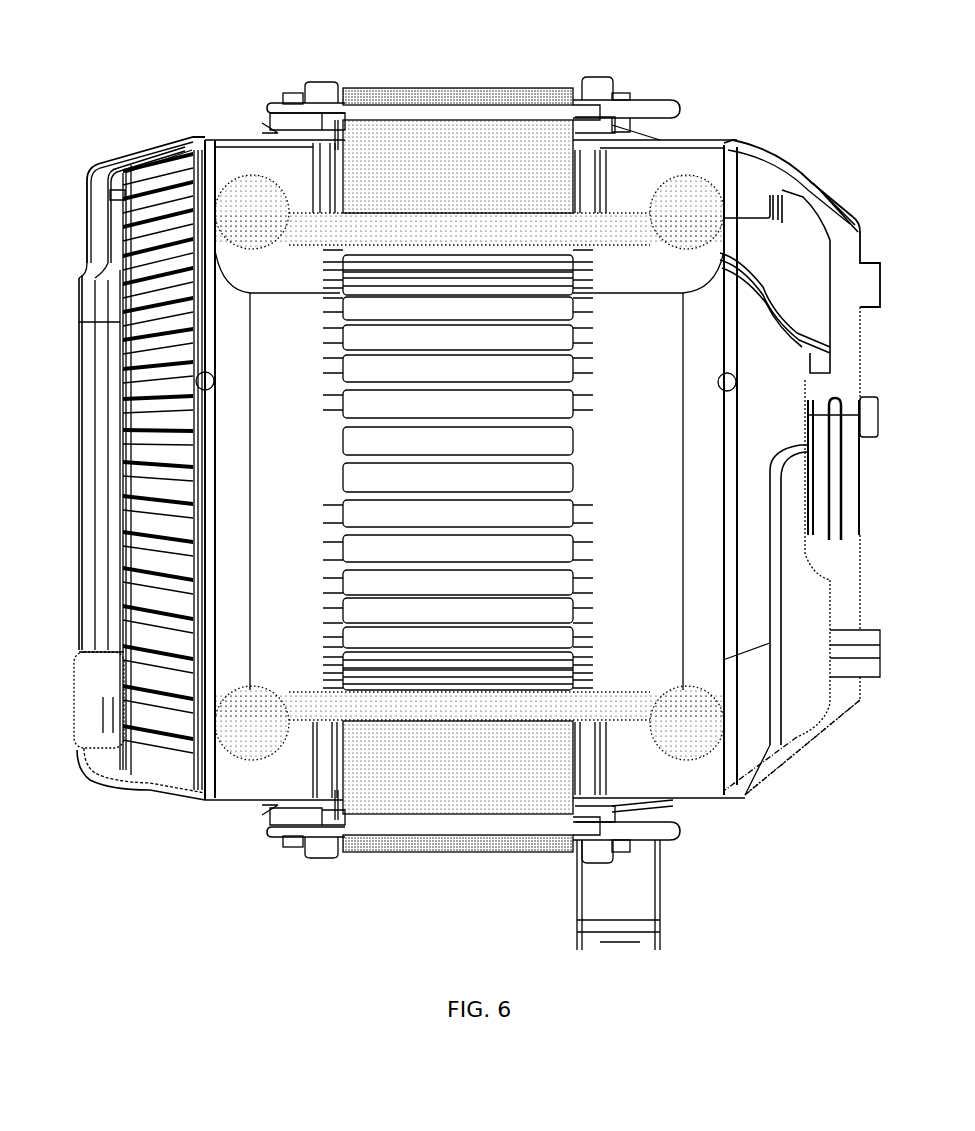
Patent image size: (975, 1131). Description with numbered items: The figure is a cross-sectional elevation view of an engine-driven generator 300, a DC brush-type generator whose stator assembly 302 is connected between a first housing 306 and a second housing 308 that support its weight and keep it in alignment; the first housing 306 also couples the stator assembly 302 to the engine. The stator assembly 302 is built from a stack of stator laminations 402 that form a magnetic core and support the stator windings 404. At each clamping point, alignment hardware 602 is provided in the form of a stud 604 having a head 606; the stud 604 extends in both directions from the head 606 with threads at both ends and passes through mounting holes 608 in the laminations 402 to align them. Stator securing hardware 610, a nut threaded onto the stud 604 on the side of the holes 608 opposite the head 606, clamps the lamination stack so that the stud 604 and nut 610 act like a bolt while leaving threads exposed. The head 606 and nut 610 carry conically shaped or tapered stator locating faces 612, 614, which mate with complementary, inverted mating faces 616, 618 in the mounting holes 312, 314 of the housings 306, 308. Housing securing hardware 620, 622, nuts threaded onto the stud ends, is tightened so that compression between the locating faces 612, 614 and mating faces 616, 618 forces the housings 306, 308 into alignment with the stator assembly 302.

The engine-driven generator 300 is at (150, 29).
The stator assembly 302 is at (350, 47).
The first housing 306 is at (123, 163).
The second housing 308 is at (763, 163).
The mounting hole 312 is at (310, 129).
The mounting hole 314 is at (604, 131).
The stator laminations 402 is at (453, 133).
The stator windings 404 is at (235, 200).
The alignment hardware 602 is at (675, 83).
The stud 604 is at (468, 104).
The head 606 is at (350, 90).
The mounting holes 608 is at (478, 134).
The stator securing hardware 610 is at (575, 95).
The stator locating face 612 is at (328, 103).
The stator locating face 614 is at (582, 110).
The mating face 616 is at (322, 96).
The mating face 618 is at (593, 92).
The housing securing hardware 620 is at (287, 97).
The housing securing hardware 622 is at (630, 97).